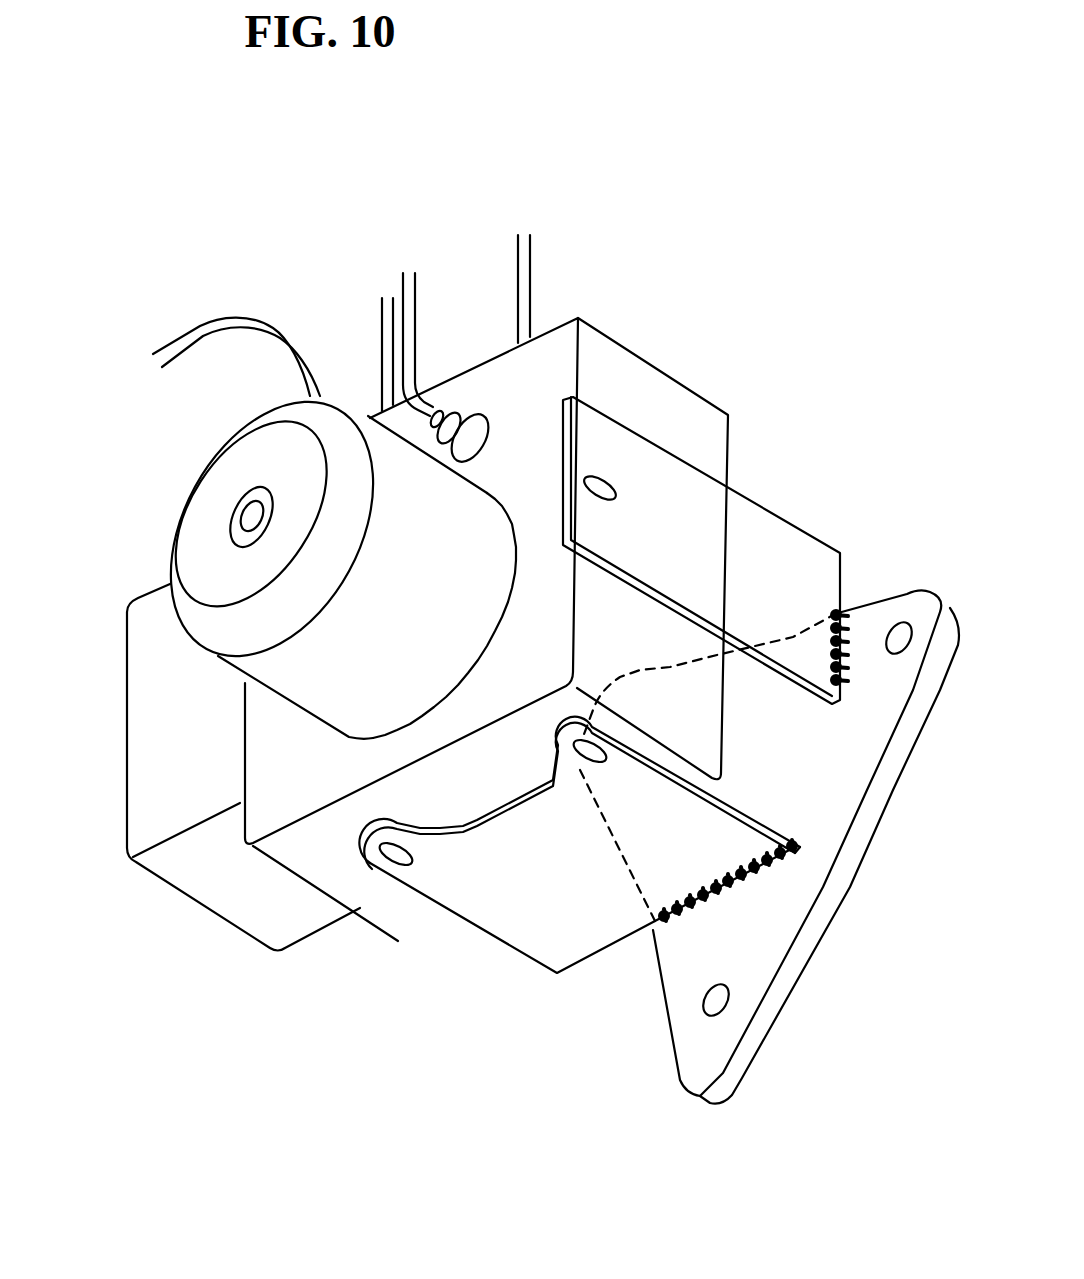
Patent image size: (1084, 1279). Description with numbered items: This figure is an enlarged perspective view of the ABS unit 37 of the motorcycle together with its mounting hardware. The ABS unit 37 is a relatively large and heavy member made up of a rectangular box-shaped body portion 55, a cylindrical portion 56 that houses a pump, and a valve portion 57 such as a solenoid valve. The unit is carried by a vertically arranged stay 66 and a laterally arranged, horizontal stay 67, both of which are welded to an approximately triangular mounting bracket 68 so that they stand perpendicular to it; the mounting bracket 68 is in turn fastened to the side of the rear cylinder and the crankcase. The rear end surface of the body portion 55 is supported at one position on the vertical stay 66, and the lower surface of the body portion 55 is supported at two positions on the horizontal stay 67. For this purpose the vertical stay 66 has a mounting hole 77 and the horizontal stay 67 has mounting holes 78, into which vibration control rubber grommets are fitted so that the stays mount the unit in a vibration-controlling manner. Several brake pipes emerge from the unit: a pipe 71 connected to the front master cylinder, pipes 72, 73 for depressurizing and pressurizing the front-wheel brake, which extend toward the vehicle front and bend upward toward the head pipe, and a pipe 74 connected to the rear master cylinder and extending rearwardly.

The ABS unit 37 is at (113, 848).
The body portion 55 is at (227, 833).
The cylindrical portion 56 is at (200, 500).
The valve portion 57 is at (123, 722).
The vertical stay 66 is at (701, 492).
The horizontal stay 67 is at (579, 886).
The mounting bracket 68 is at (683, 963).
The pipe 71 is at (383, 330).
The pipe 72 is at (207, 327).
The pipe 73 is at (418, 317).
The pipe 74 is at (533, 295).
The mounting hole 77 is at (608, 473).
The mounting holes 78 is at (390, 860).